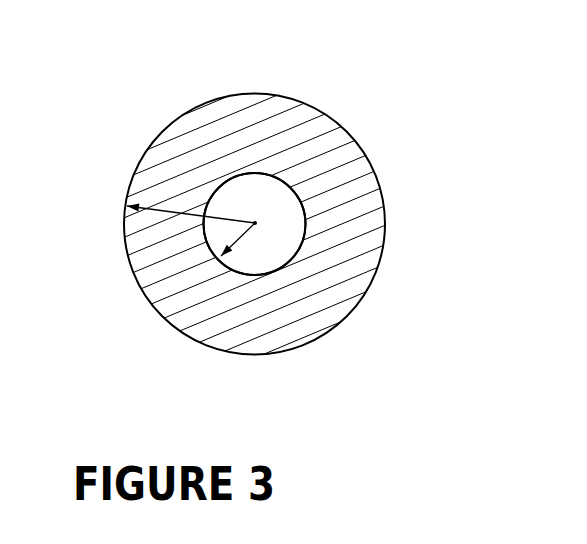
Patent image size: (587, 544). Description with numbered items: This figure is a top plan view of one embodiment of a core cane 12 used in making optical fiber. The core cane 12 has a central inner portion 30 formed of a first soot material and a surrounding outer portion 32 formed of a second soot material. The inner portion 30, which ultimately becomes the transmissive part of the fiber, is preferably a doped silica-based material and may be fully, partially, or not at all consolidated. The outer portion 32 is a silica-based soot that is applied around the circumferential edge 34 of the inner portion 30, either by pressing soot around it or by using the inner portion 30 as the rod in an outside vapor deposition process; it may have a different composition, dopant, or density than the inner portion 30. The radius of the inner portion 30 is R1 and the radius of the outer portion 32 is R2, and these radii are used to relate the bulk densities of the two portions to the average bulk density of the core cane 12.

The core cane 12 is at (358, 92).
The inner portion 30 is at (283, 218).
The outer portion 32 is at (280, 138).
The circumferential edge 34 is at (295, 258).
The radius of the inner portion R1 is at (238, 243).
The radius of the outer portion R2 is at (168, 210).